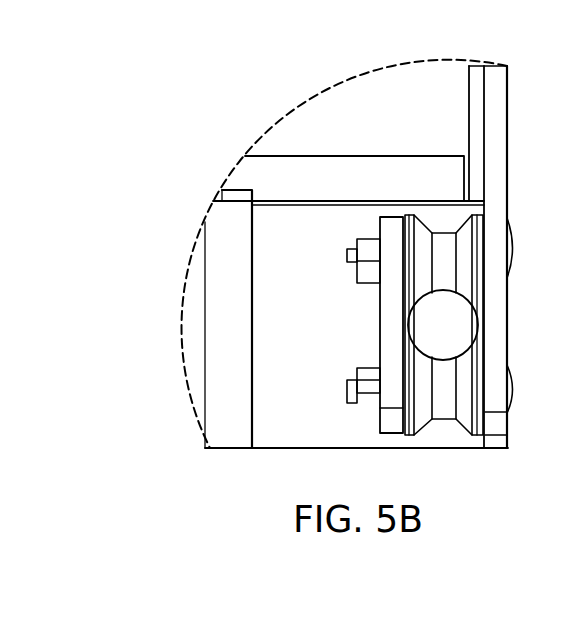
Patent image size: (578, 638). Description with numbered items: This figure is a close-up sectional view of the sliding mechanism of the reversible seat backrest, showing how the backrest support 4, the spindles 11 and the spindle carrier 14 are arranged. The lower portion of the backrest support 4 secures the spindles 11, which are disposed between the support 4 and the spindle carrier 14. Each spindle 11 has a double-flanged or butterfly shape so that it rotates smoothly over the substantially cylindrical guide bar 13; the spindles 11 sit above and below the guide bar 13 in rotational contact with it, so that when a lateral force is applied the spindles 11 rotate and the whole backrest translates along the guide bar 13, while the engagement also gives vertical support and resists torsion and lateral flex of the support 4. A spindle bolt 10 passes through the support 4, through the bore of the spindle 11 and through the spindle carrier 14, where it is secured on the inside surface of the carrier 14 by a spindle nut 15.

The backrest support 4 is at (500, 98).
The spindle bolt 10 is at (350, 393).
The spindle 11 is at (445, 247).
The guide bar 13 is at (470, 327).
The spindle carrier 14 is at (383, 397).
The spindle nut 15 is at (365, 268).